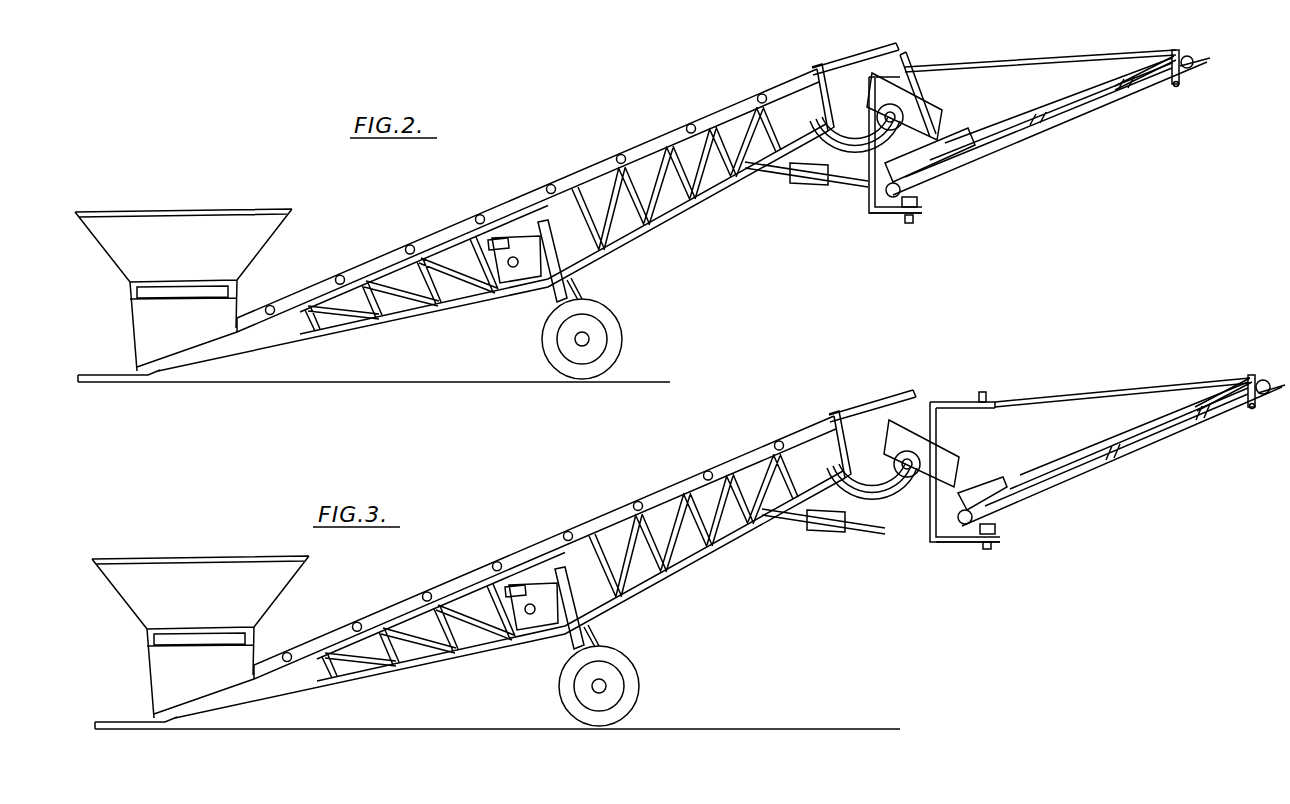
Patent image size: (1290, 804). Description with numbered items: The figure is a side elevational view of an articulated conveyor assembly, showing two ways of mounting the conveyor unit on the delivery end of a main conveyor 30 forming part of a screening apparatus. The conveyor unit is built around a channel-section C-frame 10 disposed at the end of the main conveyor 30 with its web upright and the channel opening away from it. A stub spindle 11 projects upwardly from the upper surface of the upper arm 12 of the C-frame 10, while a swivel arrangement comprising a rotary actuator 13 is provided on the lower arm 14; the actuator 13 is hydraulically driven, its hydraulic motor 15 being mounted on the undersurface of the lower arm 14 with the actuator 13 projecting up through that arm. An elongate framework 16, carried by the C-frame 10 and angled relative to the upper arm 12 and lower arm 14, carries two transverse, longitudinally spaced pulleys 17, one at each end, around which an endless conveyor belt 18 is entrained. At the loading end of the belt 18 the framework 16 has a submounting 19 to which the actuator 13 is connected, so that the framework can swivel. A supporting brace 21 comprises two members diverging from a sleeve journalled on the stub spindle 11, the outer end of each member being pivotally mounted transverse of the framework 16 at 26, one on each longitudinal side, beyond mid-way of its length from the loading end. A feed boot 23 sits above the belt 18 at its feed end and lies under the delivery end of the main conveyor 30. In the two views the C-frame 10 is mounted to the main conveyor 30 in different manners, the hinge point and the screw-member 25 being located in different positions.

In FIG. 2, the C-frame 10 is at (893, 219).
In FIG. 3, the C-frame 10 is at (975, 541).
In FIG. 2, the stub spindle 11 is at (905, 63).
In FIG. 3, the stub spindle 11 is at (984, 397).
In FIG. 2, the upper arm 12 is at (913, 77).
In FIG. 3, the upper arm 12 is at (1000, 401).
In FIG. 2, the rotary actuator 13 is at (918, 205).
In FIG. 3, the rotary actuator 13 is at (996, 531).
In FIG. 2, the lower arm 14 is at (920, 213).
In FIG. 3, the lower arm 14 is at (1003, 541).
In FIG. 2, the hydraulic motor 15 is at (909, 223).
In FIG. 3, the hydraulic motor 15 is at (989, 549).
In FIG. 2, the elongate framework 16 is at (1100, 113).
In FIG. 3, the elongate framework 16 is at (1165, 441).
In FIG. 2, the pulley 17 is at (1184, 57).
In FIG. 3, the pulley 17 is at (1258, 385).
In FIG. 2, the endless conveyor belt 18 is at (1142, 73).
In FIG. 3, the endless conveyor belt 18 is at (1200, 400).
In FIG. 2, the submounting 19 is at (900, 191).
In FIG. 3, the submounting 19 is at (977, 520).
In FIG. 2, the supporting brace 21 is at (995, 66).
In FIG. 3, the supporting brace 21 is at (1075, 393).
In FIG. 2, the feed boot 23 is at (970, 127).
In FIG. 3, the feed boot 23 is at (975, 488).
In FIG. 2, the screw-member 25 is at (780, 168).
In FIG. 3, the screw-member 25 is at (832, 496).
In FIG. 2, the pivotal mounting 26 is at (1177, 86).
In FIG. 3, the pivotal mounting 26 is at (1252, 408).
In FIG. 2, the main conveyor 30 is at (505, 184).
In FIG. 3, the main conveyor 30 is at (513, 564).